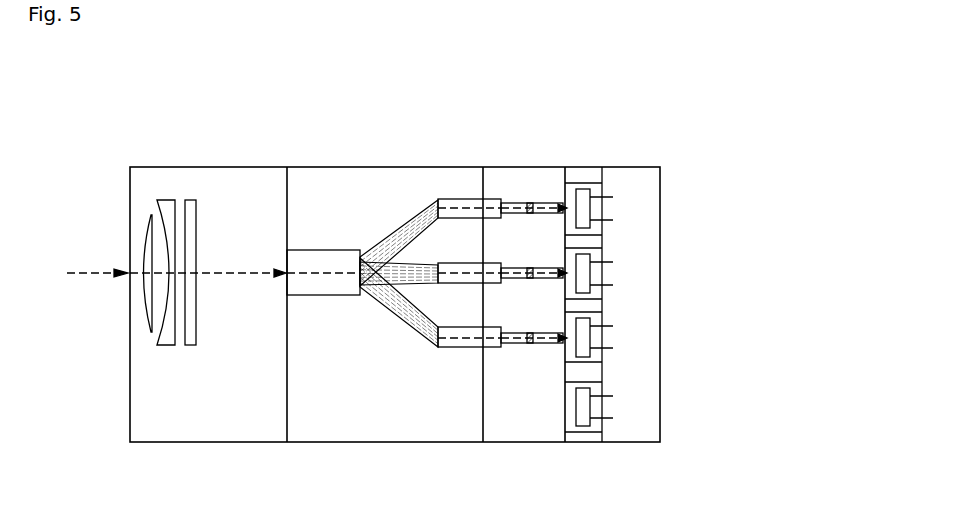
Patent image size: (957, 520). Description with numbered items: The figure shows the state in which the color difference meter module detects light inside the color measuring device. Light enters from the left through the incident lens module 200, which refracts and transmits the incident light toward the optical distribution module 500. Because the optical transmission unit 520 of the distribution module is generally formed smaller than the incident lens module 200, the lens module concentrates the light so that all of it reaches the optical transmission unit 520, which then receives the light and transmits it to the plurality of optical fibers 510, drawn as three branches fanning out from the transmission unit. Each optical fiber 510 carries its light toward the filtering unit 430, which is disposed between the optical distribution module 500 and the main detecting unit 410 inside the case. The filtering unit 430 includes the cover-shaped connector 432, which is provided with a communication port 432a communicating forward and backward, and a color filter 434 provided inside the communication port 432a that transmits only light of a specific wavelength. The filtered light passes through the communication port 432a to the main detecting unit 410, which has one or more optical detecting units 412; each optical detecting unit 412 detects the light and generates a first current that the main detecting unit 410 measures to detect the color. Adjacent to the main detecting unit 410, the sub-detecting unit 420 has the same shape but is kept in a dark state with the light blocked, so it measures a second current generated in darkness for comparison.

The incident lens module 200 is at (208, 178).
The optical distribution module 500 is at (383, 178).
The optical transmission unit 520 is at (318, 250).
The optical fiber 510 is at (459, 199).
The filtering unit 430 is at (547, 101).
The connector 432 is at (533, 205).
The communication port 432a is at (524, 205).
The color filter 434 is at (537, 178).
The main detecting unit 410 is at (678, 304).
The optical detecting unit 412 is at (585, 210).
The sub-detecting unit 420 is at (585, 408).